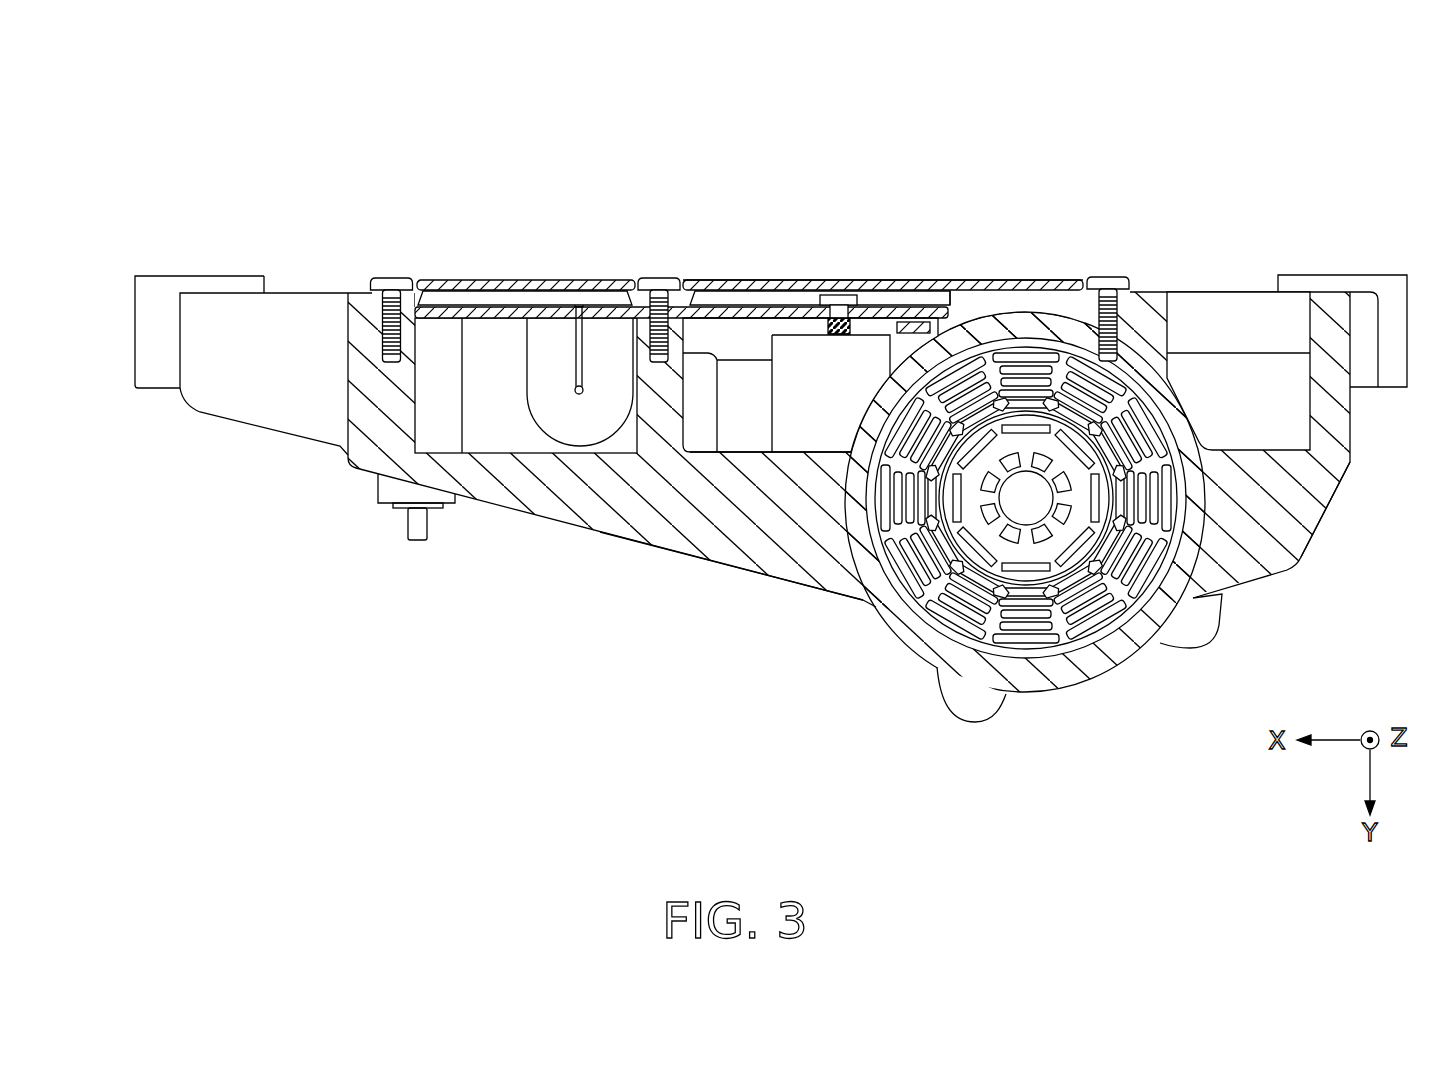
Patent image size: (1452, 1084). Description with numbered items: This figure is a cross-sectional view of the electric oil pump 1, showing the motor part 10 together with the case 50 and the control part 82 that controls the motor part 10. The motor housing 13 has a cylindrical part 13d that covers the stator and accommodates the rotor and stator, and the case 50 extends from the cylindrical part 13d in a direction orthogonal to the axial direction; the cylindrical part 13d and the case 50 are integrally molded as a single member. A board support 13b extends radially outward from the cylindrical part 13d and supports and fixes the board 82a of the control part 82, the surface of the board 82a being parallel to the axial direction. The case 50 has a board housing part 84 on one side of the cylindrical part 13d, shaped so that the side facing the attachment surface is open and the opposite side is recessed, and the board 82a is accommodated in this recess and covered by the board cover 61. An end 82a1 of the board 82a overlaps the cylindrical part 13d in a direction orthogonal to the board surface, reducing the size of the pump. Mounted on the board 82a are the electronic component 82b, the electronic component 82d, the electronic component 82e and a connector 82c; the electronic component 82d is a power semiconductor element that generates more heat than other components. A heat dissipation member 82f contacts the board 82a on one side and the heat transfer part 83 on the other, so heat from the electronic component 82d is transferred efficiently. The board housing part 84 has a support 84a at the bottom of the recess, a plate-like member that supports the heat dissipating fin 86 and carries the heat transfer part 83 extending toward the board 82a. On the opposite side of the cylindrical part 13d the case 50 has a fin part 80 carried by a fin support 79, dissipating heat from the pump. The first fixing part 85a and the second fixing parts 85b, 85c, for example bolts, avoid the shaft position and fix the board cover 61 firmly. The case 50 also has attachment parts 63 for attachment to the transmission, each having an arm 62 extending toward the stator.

The electric oil pump 1 is at (1302, 138).
The motor part 10 is at (1110, 701).
The motor housing 13 is at (916, 645).
The board support 13b is at (978, 337).
The cylindrical part 13d is at (1032, 690).
The case 50 is at (1300, 518).
The board cover 61 is at (1038, 285).
The arm 62 is at (282, 412).
The attachment part 63 is at (155, 376).
The fin support 79 is at (1280, 463).
The fin part 80 is at (1280, 423).
The control part 82 is at (706, 298).
The board 82a is at (488, 306).
The end 82a1 is at (950, 310).
The electronic component 82b is at (565, 422).
The connector 82c is at (392, 495).
The electronic component 82d is at (838, 295).
The electronic component 82e is at (911, 320).
The heat dissipation member 82f is at (838, 338).
The heat transfer part 83 is at (790, 400).
The board housing part 84 is at (745, 345).
The support 84a is at (700, 455).
The first fixing part 85a is at (1113, 277).
The second fixing part 85b is at (650, 278).
The second fixing part 85c is at (383, 278).
The heat dissipating fin 86 is at (782, 563).